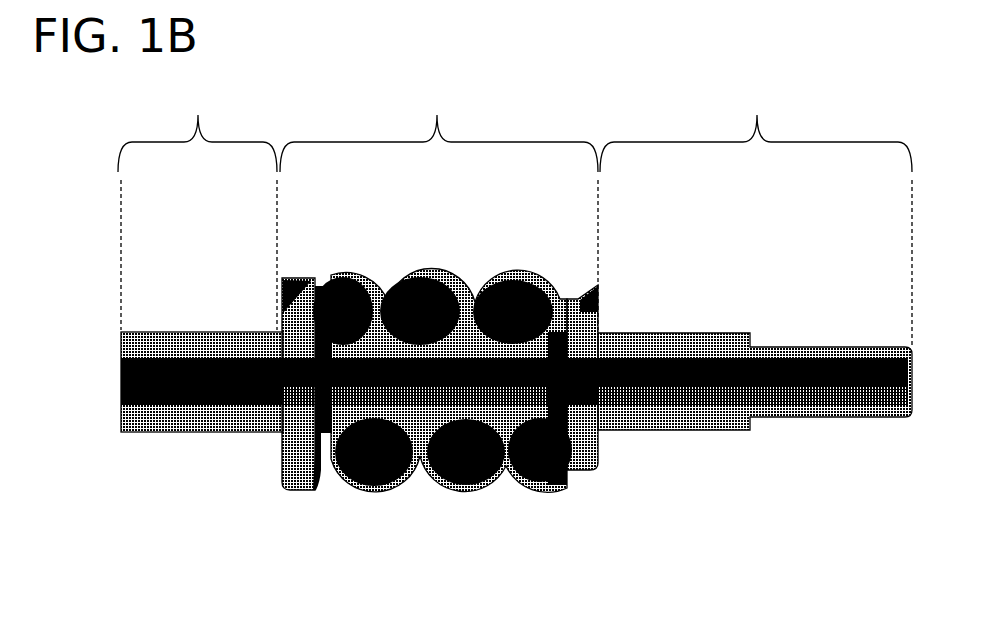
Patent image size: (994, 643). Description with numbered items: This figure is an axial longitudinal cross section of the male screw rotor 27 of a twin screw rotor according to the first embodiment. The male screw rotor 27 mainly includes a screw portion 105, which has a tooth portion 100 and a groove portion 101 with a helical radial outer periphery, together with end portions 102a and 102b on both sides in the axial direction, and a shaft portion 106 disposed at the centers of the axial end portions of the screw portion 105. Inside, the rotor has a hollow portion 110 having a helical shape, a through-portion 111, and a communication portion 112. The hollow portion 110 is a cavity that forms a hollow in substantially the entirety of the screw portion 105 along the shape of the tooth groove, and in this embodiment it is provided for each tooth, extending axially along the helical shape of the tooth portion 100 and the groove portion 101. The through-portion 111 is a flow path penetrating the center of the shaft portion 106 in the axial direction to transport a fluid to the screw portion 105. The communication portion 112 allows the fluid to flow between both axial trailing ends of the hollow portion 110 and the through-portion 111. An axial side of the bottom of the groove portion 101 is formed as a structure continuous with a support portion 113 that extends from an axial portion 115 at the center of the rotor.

The male screw rotor 27 is at (862, 62).
The tooth portion 100 is at (445, 277).
The groove portion 101 is at (486, 296).
The end portion 102a is at (599, 318).
The end portion 102b is at (281, 320).
The screw portion 105 is at (437, 208).
The shaft portion 106 is at (515, 215).
The hollow portion 110 is at (484, 488).
The through-portion 111 is at (640, 390).
The communication portion 112 is at (280, 488).
The support portion 113 is at (430, 478).
The axial portion 115 is at (393, 373).